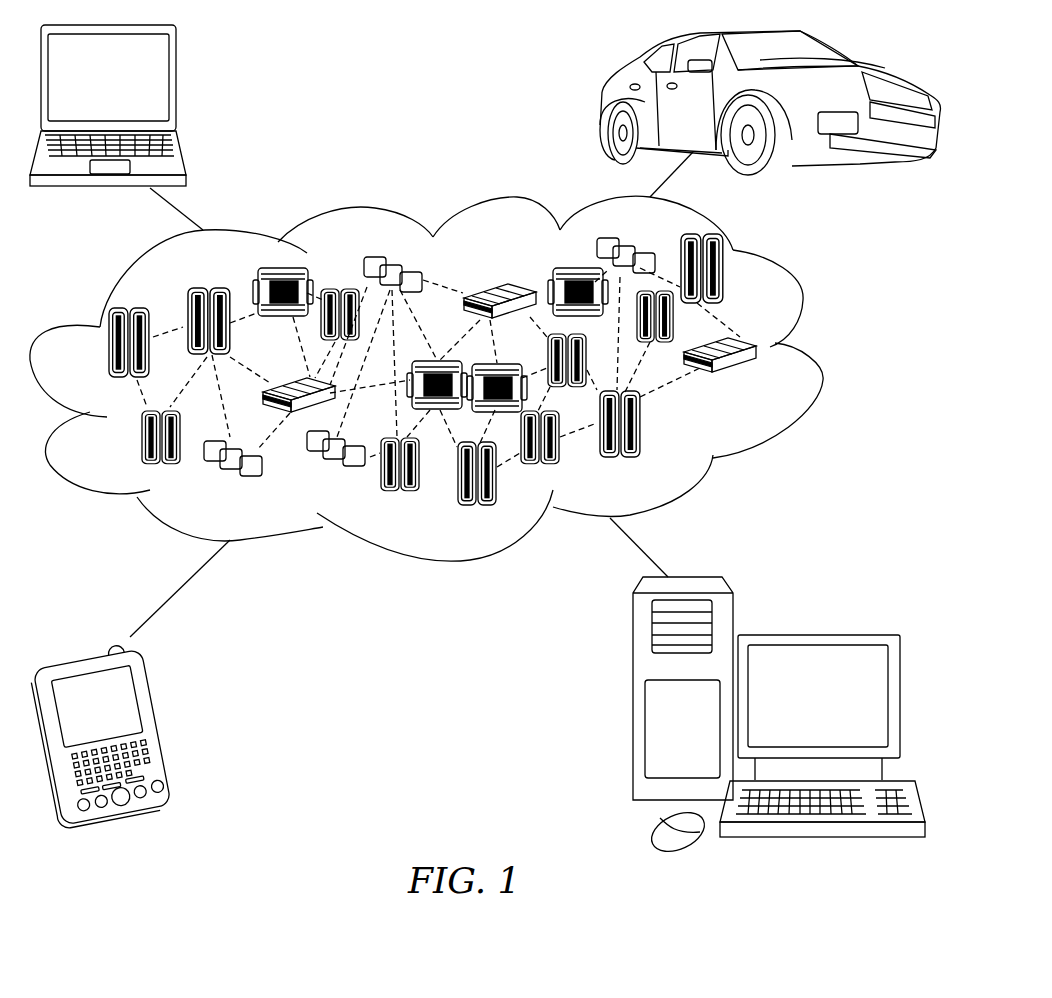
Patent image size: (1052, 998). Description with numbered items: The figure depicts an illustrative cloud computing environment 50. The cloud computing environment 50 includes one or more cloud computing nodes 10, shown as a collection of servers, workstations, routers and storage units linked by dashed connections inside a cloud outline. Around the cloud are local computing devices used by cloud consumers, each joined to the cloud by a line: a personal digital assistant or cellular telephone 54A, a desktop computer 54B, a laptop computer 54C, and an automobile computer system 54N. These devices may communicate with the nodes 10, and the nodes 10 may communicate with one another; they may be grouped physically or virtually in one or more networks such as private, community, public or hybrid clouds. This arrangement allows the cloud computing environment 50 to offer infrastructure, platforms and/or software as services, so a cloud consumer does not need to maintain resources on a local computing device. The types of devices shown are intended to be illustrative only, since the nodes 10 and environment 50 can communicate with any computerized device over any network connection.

The cloud computing node 10 is at (757, 380).
The cloud computing environment 50 is at (822, 352).
The personal digital assistant or cellular telephone 54A is at (176, 727).
The desktop computer 54B is at (815, 634).
The laptop computer 54C is at (178, 84).
The automobile computer system 54N is at (603, 100).